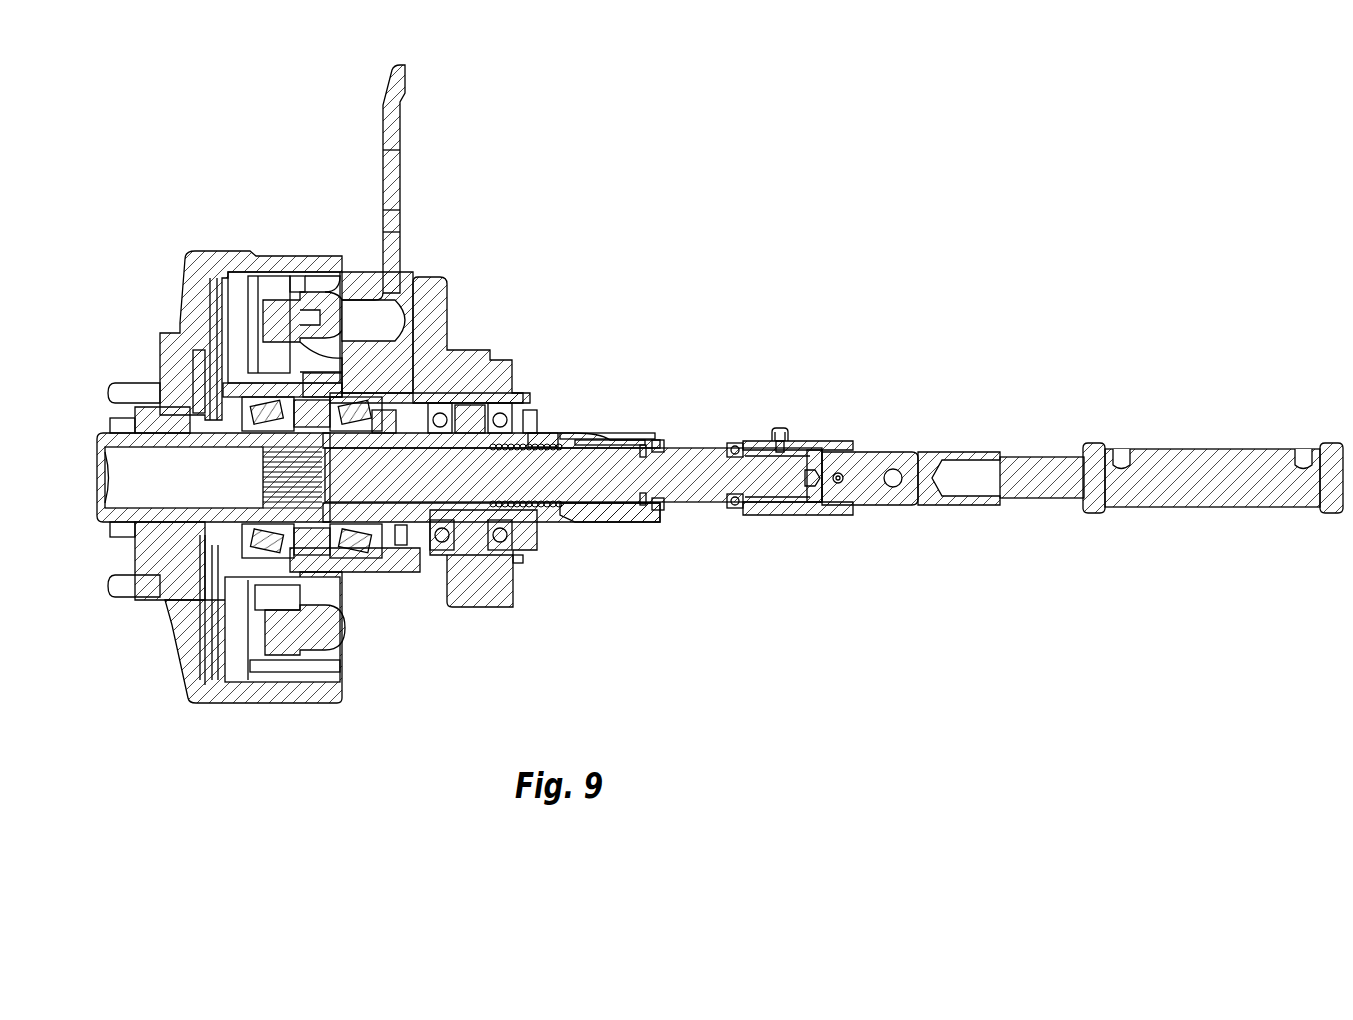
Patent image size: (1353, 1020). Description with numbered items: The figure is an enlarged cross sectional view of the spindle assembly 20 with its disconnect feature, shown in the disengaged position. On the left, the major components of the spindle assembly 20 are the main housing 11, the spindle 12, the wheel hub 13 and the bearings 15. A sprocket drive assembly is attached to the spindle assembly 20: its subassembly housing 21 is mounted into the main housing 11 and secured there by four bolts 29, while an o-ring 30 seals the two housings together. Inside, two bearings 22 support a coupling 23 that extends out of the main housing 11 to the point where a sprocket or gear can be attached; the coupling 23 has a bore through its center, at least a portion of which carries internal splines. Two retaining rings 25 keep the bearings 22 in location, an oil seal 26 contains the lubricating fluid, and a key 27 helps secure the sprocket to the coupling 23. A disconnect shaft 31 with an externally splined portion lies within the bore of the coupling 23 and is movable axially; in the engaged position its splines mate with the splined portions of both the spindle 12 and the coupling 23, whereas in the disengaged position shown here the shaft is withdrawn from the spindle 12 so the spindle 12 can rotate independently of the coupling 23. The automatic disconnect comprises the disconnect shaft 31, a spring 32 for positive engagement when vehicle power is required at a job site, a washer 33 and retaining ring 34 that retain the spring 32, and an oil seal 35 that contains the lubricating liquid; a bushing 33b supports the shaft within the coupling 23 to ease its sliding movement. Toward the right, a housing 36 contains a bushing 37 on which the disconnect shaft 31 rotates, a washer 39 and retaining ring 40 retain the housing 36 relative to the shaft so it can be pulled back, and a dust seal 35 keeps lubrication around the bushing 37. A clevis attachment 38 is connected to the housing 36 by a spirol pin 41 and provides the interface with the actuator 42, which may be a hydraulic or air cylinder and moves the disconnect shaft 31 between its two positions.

The spindle assembly 20 is at (190, 215).
The main housing 11 is at (375, 567).
The spindle 12 is at (170, 522).
The wheel hub 13 is at (165, 616).
The bearings 15 is at (272, 548).
The subassembly housing 21 is at (502, 590).
The bearings 22 is at (497, 408).
The coupling 23 is at (594, 516).
The retaining rings 25 is at (428, 423).
The oil seal 26 is at (530, 434).
The key 27 is at (630, 434).
The bolts 29 is at (520, 563).
The o-ring 30 is at (496, 425).
The disconnect shaft 31 is at (700, 448).
The spring 32 is at (540, 508).
The washer 33 is at (563, 514).
The bushing 33b is at (602, 448).
The retaining ring 34 is at (642, 508).
The oil seal 35 is at (660, 512).
The housing 36 is at (764, 448).
The bushing 37 is at (772, 504).
The clevis attachment 38 is at (885, 452).
The washer 39 is at (812, 449).
The retaining ring 40 is at (822, 452).
The spirol pin 41 is at (840, 484).
The actuator 42 is at (1197, 456).